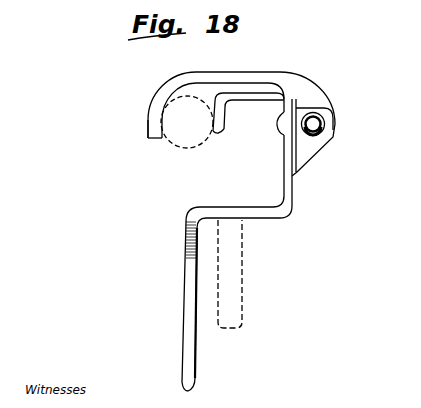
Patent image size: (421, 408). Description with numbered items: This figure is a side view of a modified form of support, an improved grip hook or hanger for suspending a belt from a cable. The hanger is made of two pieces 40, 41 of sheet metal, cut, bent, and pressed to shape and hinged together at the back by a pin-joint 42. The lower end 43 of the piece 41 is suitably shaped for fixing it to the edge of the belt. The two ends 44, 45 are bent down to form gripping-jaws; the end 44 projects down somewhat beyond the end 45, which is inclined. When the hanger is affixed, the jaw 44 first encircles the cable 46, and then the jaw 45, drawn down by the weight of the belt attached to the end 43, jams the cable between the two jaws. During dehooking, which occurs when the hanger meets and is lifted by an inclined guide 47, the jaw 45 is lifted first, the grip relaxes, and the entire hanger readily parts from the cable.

The piece of sheet metal 40 is at (311, 93).
The piece of sheet metal 41 is at (300, 204).
The pin-joint 42 is at (325, 123).
The lower end 43 is at (185, 305).
The end (gripping-jaw) 44 is at (153, 141).
The end (gripping-jaw) 45 is at (224, 131).
The cable 46 is at (187, 142).
The inclined guide 47 is at (243, 304).